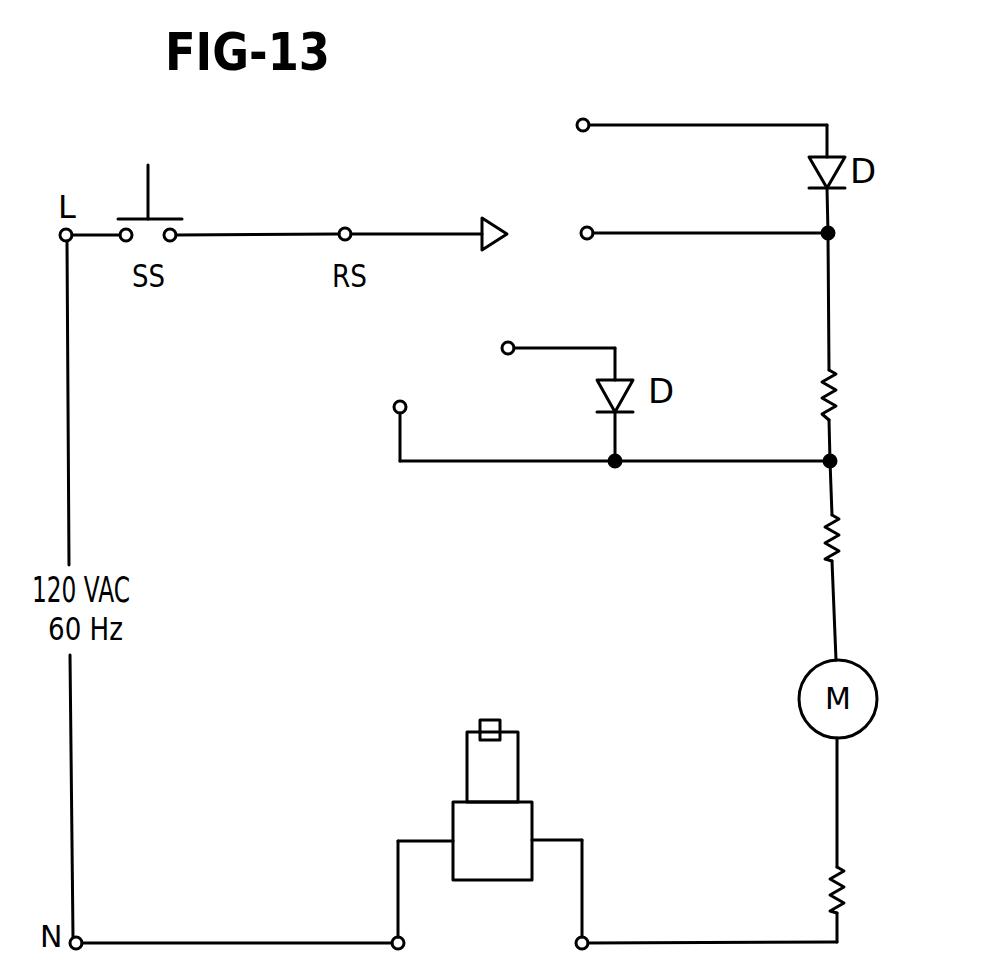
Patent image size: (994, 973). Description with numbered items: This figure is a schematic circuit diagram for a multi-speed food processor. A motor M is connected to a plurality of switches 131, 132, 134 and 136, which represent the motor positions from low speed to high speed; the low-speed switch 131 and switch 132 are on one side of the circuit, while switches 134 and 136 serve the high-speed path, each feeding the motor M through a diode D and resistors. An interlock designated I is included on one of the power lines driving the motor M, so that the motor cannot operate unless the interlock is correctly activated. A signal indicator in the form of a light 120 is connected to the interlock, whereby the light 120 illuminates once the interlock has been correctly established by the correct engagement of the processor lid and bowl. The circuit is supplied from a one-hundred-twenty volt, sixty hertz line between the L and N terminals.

The light 120 is at (490, 719).
The switch 131 is at (577, 125).
The switch 132 is at (589, 226).
The switch 134 is at (508, 341).
The switch 136 is at (400, 400).